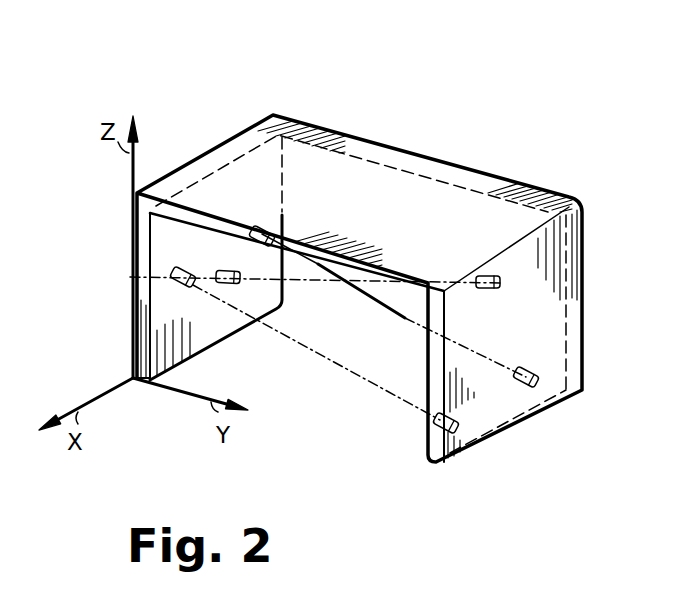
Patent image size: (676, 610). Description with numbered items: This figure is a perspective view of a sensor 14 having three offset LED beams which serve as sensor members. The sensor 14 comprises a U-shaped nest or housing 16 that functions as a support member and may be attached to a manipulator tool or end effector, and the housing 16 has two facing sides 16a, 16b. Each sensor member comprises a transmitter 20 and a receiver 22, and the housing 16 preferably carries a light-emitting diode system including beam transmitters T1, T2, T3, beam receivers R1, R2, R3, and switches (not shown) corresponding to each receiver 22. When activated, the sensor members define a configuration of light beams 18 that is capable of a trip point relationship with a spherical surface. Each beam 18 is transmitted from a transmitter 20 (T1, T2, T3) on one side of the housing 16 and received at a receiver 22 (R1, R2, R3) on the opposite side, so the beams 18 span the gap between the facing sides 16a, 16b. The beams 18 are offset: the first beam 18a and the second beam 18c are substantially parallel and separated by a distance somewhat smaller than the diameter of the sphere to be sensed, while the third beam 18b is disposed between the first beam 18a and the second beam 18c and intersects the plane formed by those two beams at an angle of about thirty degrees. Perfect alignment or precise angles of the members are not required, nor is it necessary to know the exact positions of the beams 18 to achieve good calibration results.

The sensor 14 is at (213, 122).
The housing 16 is at (458, 174).
The facing side of housing 16a is at (584, 212).
The facing side of housing 16b is at (130, 323).
The light beams 18 is at (328, 348).
The first beam 18a is at (342, 367).
The third beam 18b is at (368, 263).
The second beam 18c is at (363, 290).
The transmitter 20 is at (538, 356).
The receiver 22 is at (208, 192).
The beam receiver R1 is at (173, 274).
The beam receiver R2 is at (249, 166).
The beam receiver R3 is at (221, 268).
The beam transmitter T1 is at (456, 437).
The beam transmitter T2 is at (537, 380).
The beam transmitter T3 is at (488, 276).